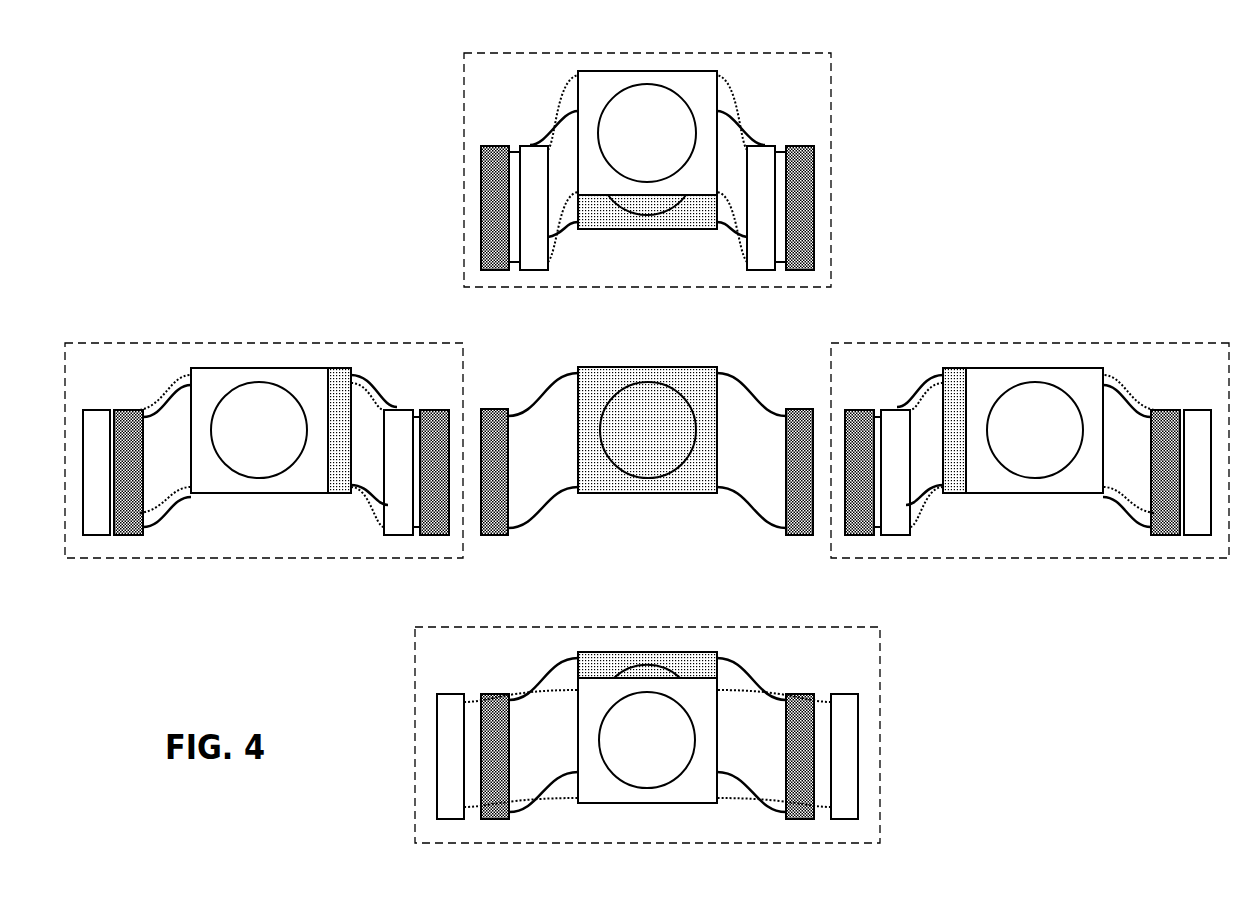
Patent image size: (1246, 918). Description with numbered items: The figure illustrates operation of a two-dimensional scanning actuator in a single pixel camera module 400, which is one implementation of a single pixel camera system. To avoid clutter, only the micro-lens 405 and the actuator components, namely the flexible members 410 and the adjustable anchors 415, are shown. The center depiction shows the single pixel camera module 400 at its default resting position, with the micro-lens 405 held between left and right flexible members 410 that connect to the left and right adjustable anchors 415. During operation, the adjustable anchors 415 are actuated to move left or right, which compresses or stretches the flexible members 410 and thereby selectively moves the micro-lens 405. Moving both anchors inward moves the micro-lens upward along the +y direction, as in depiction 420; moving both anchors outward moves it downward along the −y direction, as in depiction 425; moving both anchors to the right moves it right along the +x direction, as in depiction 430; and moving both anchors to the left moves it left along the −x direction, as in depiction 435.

The single pixel camera module 400 is at (647, 479).
The micro-lens 405 is at (662, 444).
The flexible members 410 is at (521, 416).
The adjustable anchors 415 is at (493, 408).
The depiction 420 is at (831, 102).
The depiction 425 is at (881, 685).
The depiction 430 is at (1097, 343).
The depiction 435 is at (138, 343).